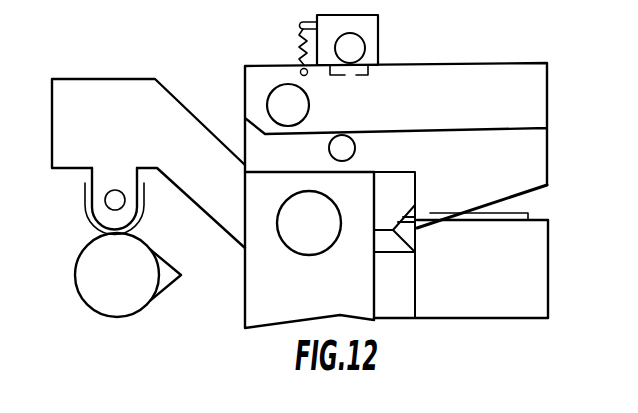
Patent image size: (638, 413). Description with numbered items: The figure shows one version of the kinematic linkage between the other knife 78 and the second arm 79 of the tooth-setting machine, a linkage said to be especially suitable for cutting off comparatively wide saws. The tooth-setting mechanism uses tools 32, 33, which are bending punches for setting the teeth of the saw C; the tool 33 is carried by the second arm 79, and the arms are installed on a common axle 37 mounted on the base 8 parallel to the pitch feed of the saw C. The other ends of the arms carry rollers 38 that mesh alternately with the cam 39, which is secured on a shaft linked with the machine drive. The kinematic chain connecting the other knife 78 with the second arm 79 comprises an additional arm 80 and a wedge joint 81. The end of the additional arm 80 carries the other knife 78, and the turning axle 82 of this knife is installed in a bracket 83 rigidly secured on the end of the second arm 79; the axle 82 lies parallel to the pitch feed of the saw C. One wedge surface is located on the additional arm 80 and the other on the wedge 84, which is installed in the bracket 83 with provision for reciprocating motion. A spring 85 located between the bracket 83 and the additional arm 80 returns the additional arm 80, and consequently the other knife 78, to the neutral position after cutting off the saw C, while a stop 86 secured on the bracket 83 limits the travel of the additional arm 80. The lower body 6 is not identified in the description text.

The second arm 79 is at (115, 90).
The rollers 38 is at (90, 217).
The cam 39 is at (96, 300).
The additional arm 80 is at (512, 75).
The other knife 78 is at (533, 146).
The bracket 83 is at (363, 23).
The wedge 84 is at (344, 40).
The spring 85 is at (300, 48).
The wedge joint 81 is at (351, 67).
The axle 82 is at (268, 99).
The stop 86 is at (353, 138).
The base 8 is at (268, 297).
The common axle 37 is at (302, 235).
The tooth-setting tool 33 is at (388, 192).
The tool 32 is at (393, 240).
The base block 6 is at (535, 257).
The saw C is at (520, 211).